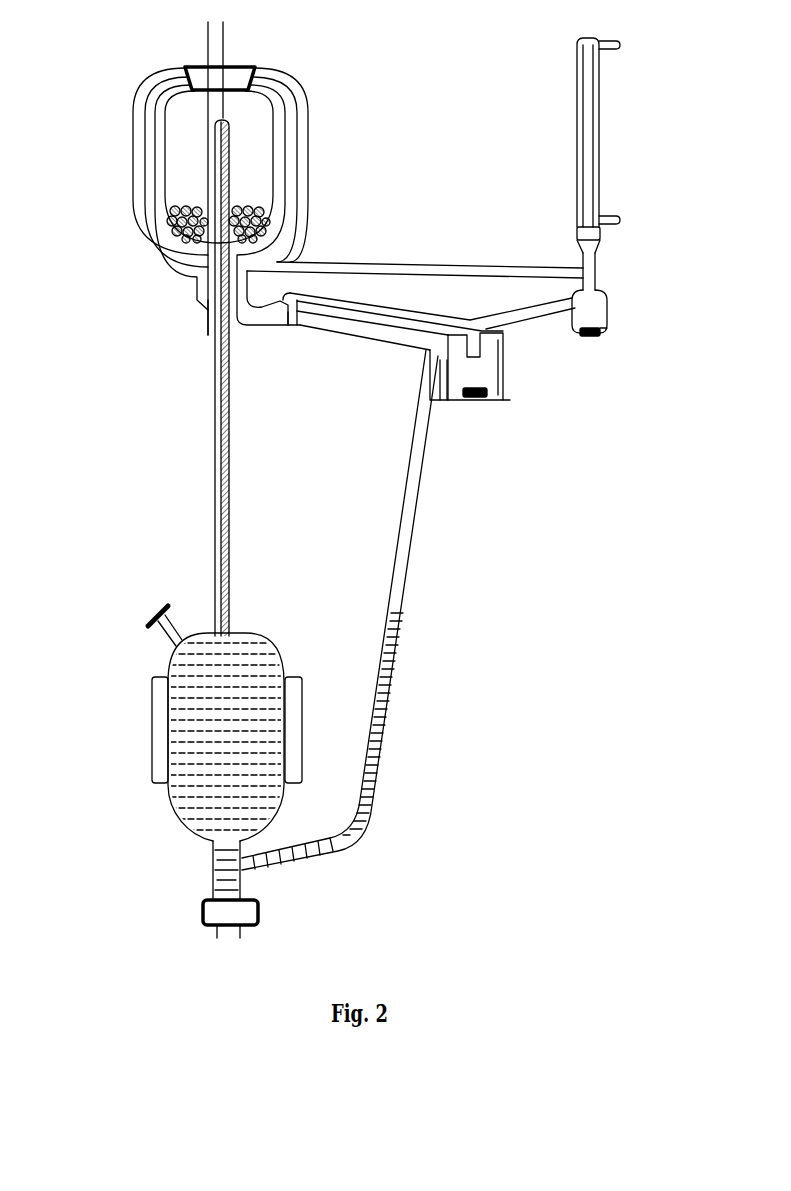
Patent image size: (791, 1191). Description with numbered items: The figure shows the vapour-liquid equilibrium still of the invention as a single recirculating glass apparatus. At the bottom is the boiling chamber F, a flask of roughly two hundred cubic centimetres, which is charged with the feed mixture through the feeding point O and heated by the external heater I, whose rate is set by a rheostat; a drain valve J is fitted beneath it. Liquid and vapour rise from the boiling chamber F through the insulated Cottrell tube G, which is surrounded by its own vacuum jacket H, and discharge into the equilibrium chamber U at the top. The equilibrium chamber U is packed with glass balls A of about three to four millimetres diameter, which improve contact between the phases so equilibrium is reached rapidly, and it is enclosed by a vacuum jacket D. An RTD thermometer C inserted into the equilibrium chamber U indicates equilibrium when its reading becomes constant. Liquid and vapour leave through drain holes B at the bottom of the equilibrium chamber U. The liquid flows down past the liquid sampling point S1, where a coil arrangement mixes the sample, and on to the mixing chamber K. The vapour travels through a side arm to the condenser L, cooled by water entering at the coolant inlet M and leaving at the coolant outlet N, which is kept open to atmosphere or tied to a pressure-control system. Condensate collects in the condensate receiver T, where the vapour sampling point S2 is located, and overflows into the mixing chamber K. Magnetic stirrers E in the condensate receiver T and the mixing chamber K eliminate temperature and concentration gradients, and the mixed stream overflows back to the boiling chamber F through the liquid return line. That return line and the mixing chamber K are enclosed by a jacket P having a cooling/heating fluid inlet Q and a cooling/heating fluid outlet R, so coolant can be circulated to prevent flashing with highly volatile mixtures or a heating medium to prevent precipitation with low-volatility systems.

The glass balls A is at (190, 214).
The drain holes B is at (173, 230).
The RTD thermometer C is at (212, 43).
The vacuum jacket for equilibrium chamber D is at (147, 262).
The magnetic stirrers E is at (502, 396).
The boiling chamber F is at (172, 803).
The insulated Cottrell tube G is at (215, 473).
The vacuum jacket for Cottrell tube H is at (215, 517).
The external heater I is at (152, 707).
The drain valve J is at (201, 912).
The mixing chamber K is at (463, 378).
The condenser L is at (600, 163).
The coolant inlet M is at (624, 220).
The coolant outlet N is at (624, 45).
The feeding point O is at (146, 622).
The jacket for liquid return line and mixing chamber P is at (352, 323).
The cooling/heating fluid inlet Q is at (291, 340).
The cooling/heating fluid outlet R is at (450, 417).
The liquid sampling point S1 is at (206, 333).
The vapour sampling point S2 is at (608, 331).
The condensate receiver T is at (592, 308).
The equilibrium chamber U is at (258, 159).